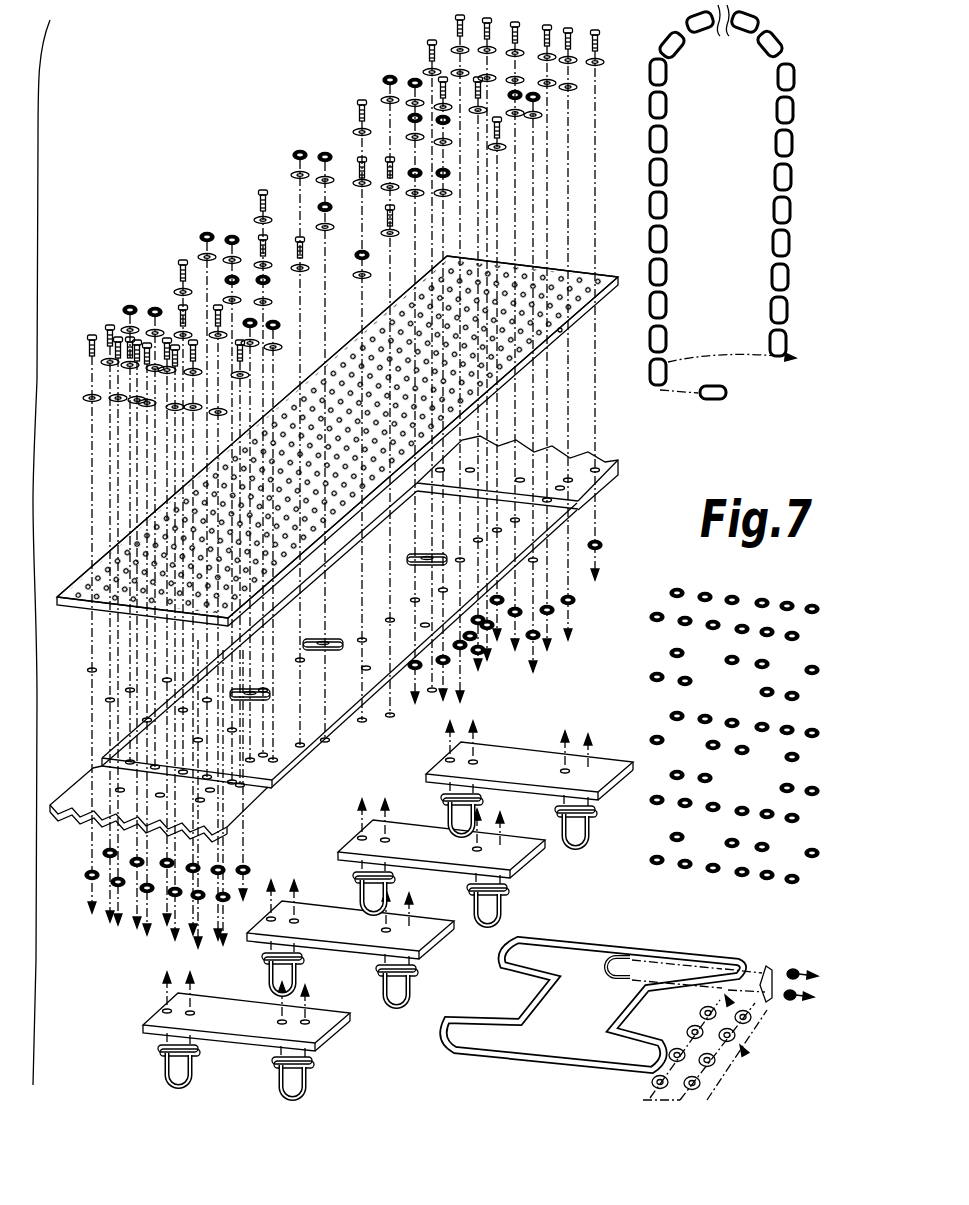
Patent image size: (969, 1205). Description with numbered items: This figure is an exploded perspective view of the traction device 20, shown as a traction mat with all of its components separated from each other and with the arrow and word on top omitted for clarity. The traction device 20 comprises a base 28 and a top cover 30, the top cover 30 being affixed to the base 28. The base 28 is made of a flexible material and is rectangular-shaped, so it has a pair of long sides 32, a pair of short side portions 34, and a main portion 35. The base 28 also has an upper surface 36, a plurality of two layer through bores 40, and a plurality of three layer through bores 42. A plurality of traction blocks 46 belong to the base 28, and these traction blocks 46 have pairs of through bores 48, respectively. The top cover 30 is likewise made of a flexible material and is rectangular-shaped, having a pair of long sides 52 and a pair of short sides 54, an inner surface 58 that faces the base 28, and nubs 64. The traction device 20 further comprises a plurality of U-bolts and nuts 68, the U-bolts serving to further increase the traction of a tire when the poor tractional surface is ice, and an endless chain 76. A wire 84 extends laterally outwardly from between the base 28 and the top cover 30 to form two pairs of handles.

The traction device 20 is at (129, 78).
The base 28 is at (304, 775).
The top cover 30 is at (78, 571).
The long sides 32 is at (106, 750).
The short side portions 34 is at (84, 793).
The main portion 35 is at (418, 626).
The upper surface 36 is at (475, 642).
The two layer through bores 40 is at (323, 751).
The three layer through bores 42 is at (366, 674).
The traction blocks 46 is at (148, 1008).
The through bores 48 is at (308, 1024).
The long sides 52 is at (101, 545).
The short sides 54 is at (76, 614).
The inner surface 58 is at (560, 332).
The nubs 64 is at (290, 398).
The U-bolts and nuts 68 is at (161, 1081).
The endless chain 76 is at (686, 54).
The wire 84 is at (546, 1063).